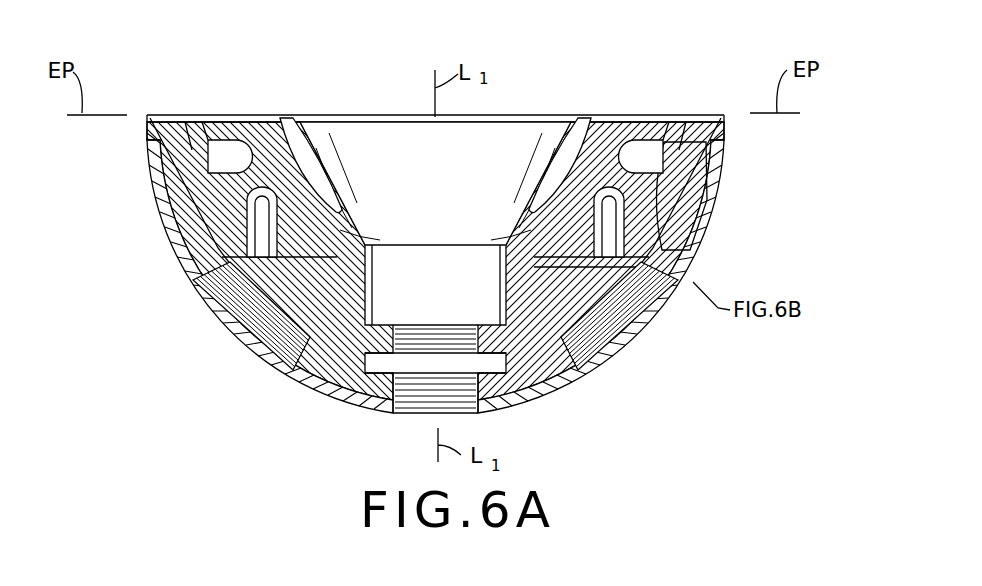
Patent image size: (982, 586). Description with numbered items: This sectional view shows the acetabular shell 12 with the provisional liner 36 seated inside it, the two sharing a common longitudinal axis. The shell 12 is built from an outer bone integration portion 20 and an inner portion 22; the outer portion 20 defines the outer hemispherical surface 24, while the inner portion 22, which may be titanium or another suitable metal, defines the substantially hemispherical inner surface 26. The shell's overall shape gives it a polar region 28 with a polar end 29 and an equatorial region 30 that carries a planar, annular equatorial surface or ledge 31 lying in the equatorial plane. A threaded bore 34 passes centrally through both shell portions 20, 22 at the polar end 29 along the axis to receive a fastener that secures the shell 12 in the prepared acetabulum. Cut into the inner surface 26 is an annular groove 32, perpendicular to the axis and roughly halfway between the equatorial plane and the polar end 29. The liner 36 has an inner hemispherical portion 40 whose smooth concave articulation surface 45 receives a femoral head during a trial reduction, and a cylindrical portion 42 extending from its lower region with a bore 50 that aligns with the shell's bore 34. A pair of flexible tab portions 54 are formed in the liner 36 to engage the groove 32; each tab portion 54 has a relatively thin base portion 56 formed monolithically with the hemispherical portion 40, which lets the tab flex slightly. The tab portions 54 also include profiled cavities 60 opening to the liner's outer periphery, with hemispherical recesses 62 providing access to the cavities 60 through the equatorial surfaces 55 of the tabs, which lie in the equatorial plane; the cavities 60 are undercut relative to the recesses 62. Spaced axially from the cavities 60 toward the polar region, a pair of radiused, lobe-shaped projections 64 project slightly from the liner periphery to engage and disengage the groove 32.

The acetabular shell 12 is at (275, 396).
The outer bone integration portion 20 is at (180, 262).
The inner portion 22 is at (188, 178).
The outer hemispherical surface 24 is at (627, 347).
The inner surface 26 is at (672, 143).
The polar region 28 is at (351, 417).
The polar end 29 is at (415, 429).
The equatorial region 30 is at (125, 143).
The equatorial surface or ledge 31 is at (167, 112).
The annular groove 32 is at (185, 282).
The threaded bore 34 is at (462, 405).
The provisional liner 36 is at (545, 76).
The inner hemispherical portion 40 is at (302, 228).
The cylindrical portion 42 is at (596, 352).
The articulation surface 45 is at (368, 113).
The bore 50 is at (470, 340).
The flexible tab portions 54 is at (273, 113).
The equatorial surfaces 55 is at (245, 115).
The base portion 56 is at (262, 318).
The profiled cavities 60 is at (213, 140).
The hemispherical recesses 62 is at (205, 120).
The projections 64 is at (187, 233).